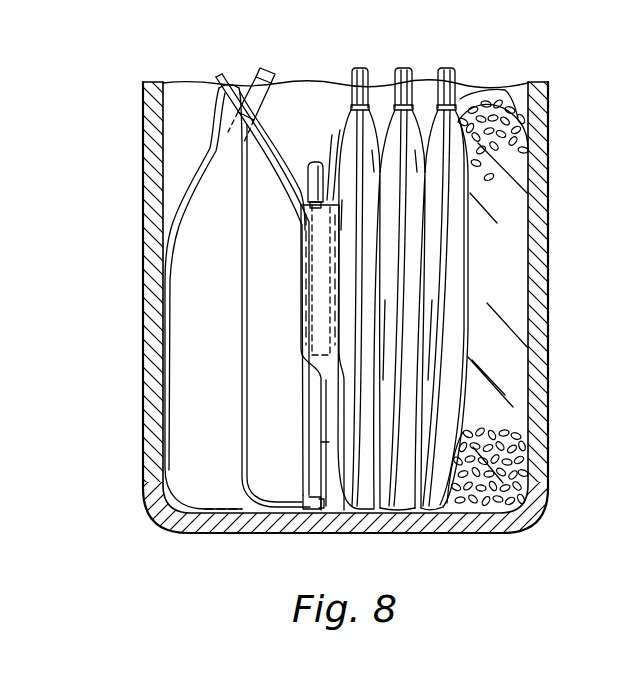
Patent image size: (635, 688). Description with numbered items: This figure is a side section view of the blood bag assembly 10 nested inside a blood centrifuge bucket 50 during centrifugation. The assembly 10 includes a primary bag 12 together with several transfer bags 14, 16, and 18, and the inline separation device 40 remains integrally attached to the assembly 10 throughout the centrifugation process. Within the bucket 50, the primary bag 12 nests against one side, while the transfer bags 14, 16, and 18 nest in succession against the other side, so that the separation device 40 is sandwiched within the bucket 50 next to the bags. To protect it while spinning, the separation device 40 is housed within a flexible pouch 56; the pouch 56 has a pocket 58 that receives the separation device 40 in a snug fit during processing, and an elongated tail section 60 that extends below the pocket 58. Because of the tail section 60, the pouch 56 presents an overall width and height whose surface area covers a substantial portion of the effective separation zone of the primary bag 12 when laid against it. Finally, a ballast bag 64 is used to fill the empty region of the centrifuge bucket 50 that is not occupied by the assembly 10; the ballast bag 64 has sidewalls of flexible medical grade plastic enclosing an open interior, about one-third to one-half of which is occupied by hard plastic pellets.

The assembly 10 is at (326, 60).
The primary bag 12 is at (182, 261).
The transfer bag 14 is at (338, 125).
The transfer bag 16 is at (402, 123).
The transfer bag 18 is at (463, 108).
The separation device 40 is at (323, 268).
The centrifuge bucket 50 is at (548, 91).
The flexible pouch 56 is at (297, 232).
The pocket 58 is at (329, 162).
The elongated tail section 60 is at (322, 402).
The ballast bag 64 is at (508, 178).